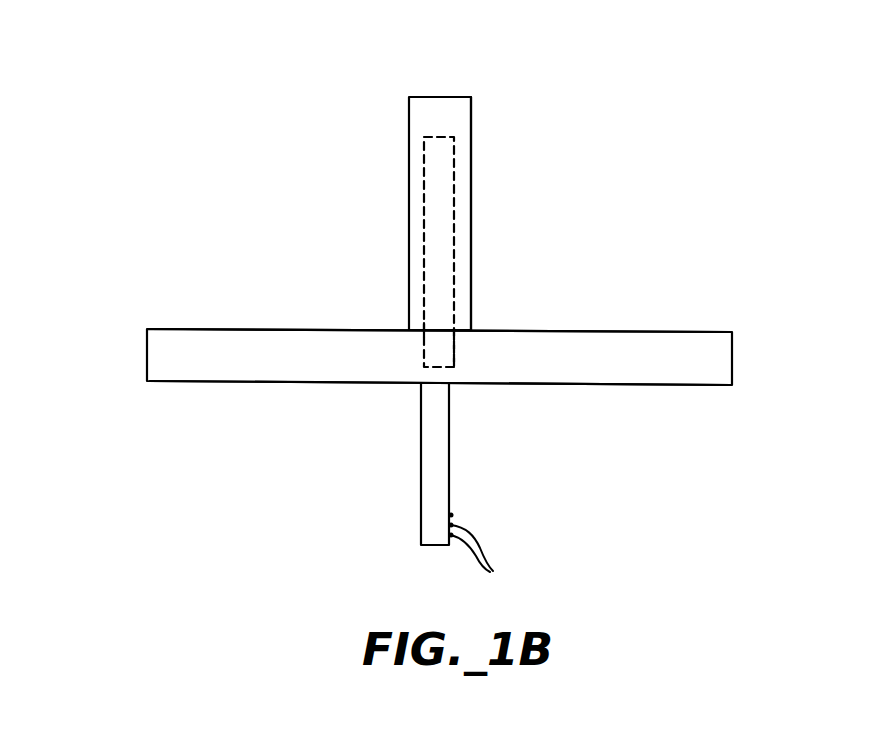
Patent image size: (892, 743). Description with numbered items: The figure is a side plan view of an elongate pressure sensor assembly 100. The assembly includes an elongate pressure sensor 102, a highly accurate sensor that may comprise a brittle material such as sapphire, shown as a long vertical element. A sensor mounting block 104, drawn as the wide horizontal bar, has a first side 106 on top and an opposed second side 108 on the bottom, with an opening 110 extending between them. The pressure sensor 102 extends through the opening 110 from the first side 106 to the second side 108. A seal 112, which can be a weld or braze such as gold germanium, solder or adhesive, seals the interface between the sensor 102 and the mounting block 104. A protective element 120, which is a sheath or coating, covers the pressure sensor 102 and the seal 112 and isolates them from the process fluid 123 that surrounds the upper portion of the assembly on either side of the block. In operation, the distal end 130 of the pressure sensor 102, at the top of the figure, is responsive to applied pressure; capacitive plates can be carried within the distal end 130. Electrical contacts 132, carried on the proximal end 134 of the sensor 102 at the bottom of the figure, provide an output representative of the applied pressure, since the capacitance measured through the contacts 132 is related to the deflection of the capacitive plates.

The elongate pressure sensor assembly 100 is at (672, 170).
The elongate pressure sensor 102 is at (458, 190).
The sensor mounting block 104 is at (142, 320).
The first side 106 is at (676, 331).
The second side 108 is at (675, 386).
The opening 110 is at (455, 355).
The seal 112 is at (423, 330).
The protective element 120 is at (472, 158).
The process fluid 123 is at (263, 311).
The distal end 130 is at (409, 143).
The electrical contacts 132 is at (496, 548).
The proximal end 134 is at (424, 546).